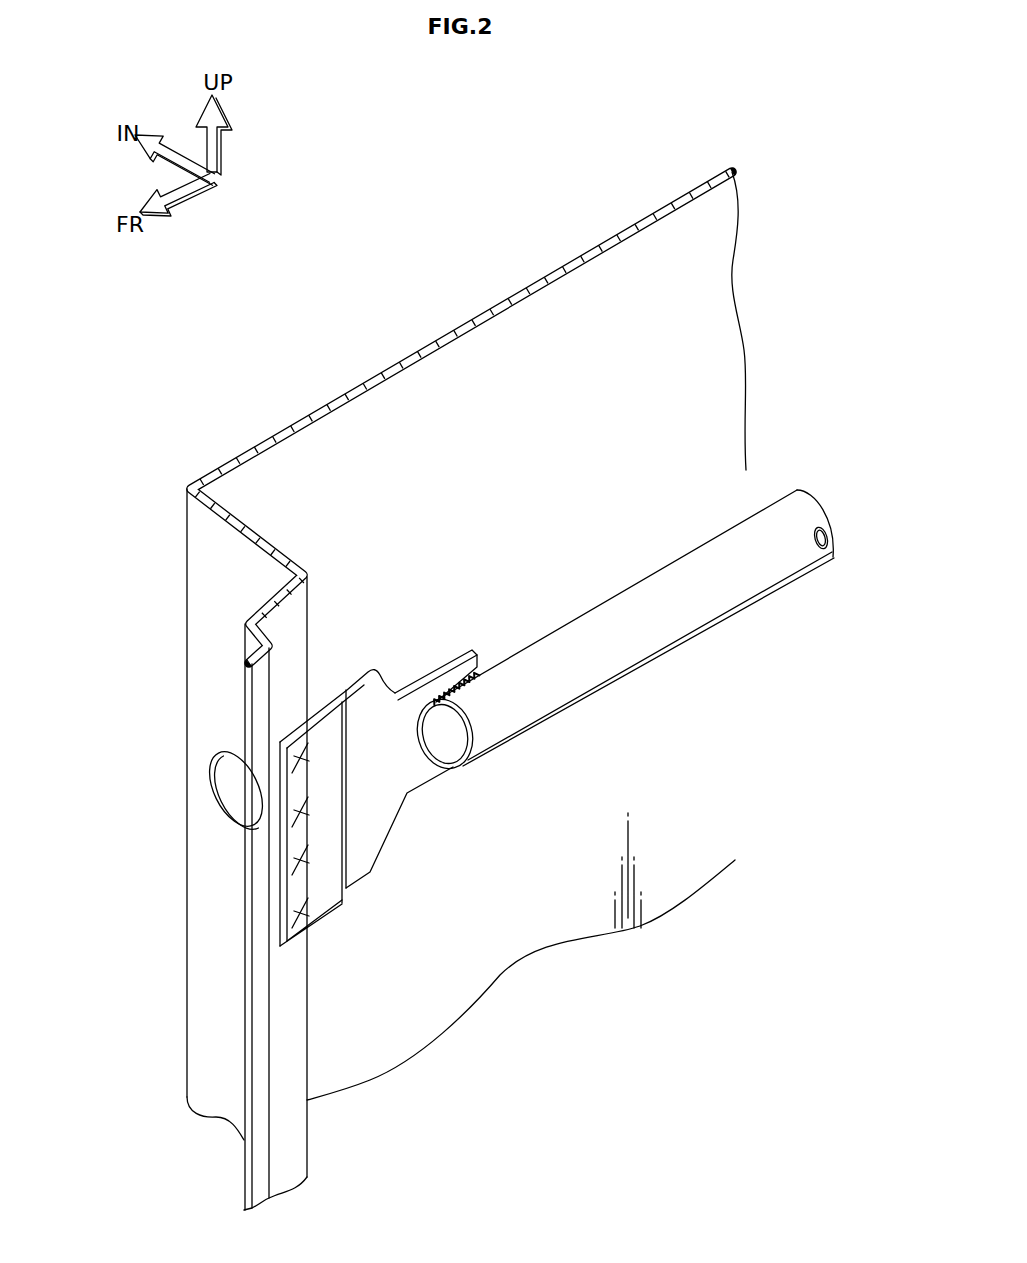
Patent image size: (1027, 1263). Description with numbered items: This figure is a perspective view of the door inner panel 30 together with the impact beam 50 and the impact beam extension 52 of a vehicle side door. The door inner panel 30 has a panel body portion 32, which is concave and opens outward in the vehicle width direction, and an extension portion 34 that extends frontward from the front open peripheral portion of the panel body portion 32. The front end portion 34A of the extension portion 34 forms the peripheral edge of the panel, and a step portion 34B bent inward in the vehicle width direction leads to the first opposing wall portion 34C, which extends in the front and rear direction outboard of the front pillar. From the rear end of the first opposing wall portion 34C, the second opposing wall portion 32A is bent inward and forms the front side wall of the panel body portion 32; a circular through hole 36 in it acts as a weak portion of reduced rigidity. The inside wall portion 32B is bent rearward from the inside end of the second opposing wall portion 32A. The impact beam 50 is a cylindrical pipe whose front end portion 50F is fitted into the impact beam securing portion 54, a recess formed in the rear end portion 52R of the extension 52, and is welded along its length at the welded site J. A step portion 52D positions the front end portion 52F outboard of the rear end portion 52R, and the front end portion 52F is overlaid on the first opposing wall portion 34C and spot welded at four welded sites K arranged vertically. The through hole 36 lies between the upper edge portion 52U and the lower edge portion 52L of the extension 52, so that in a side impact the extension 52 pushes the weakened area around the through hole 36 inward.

The door inner panel 30 is at (647, 170).
The panel body portion 32 is at (571, 256).
The second opposing wall portion 32A is at (212, 860).
The inside wall portion 32B is at (495, 292).
The extension portion 34 is at (103, 628).
The front end portion 34A is at (250, 655).
The step portion 34B is at (256, 636).
The first opposing wall portion 34C is at (268, 597).
The through hole 36 is at (207, 795).
The impact beam 50 is at (712, 638).
The front end portion 50F is at (504, 745).
The impact beam extension 52 is at (399, 640).
The upper edge portion 52U is at (321, 706).
The step portion 52D is at (348, 893).
The front end portion 52F is at (326, 895).
The lower edge portion 52L is at (314, 929).
The rear end portion 52R is at (458, 652).
The impact beam securing portion 54 is at (414, 748).
The welded site J is at (484, 688).
The welded sites K is at (297, 812).